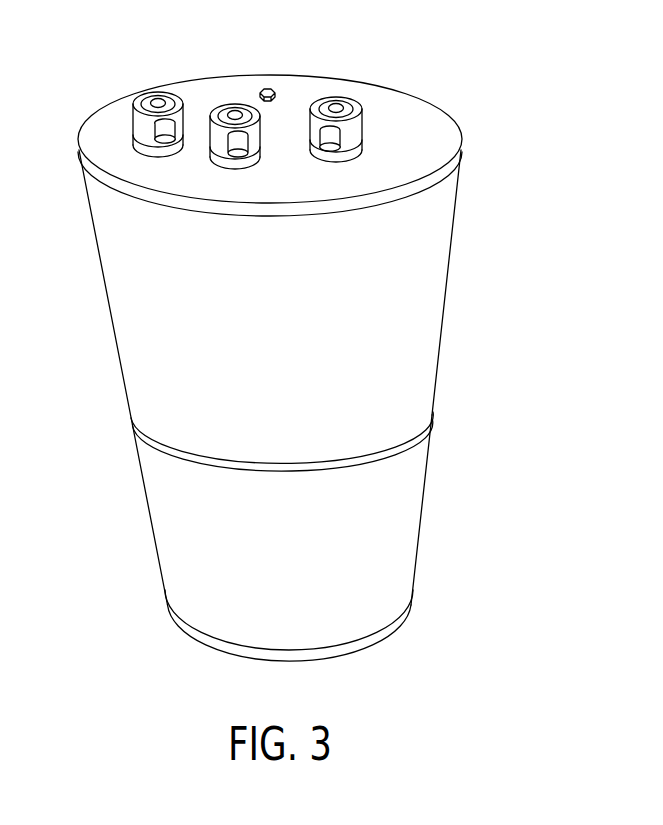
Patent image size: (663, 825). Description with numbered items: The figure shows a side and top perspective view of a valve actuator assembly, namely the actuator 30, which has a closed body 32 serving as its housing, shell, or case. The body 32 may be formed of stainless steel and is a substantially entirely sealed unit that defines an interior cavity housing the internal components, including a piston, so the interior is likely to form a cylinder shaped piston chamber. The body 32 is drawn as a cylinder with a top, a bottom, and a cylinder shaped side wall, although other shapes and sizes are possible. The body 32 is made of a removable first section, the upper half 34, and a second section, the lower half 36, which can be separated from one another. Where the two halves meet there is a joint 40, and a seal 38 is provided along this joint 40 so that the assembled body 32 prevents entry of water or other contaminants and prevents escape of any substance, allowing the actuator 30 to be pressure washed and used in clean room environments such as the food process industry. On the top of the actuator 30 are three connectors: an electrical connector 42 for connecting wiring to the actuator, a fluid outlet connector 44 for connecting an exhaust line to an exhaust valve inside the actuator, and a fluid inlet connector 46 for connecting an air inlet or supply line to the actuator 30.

The actuator 30 is at (467, 62).
The body 32 is at (444, 305).
The upper half 34 is at (130, 305).
The lower half 36 is at (183, 537).
The seal 38 is at (383, 450).
The joint 40 is at (320, 466).
The electrical connector 42 is at (225, 103).
The fluid outlet connector 44 is at (347, 98).
The fluid inlet connector 46 is at (148, 92).